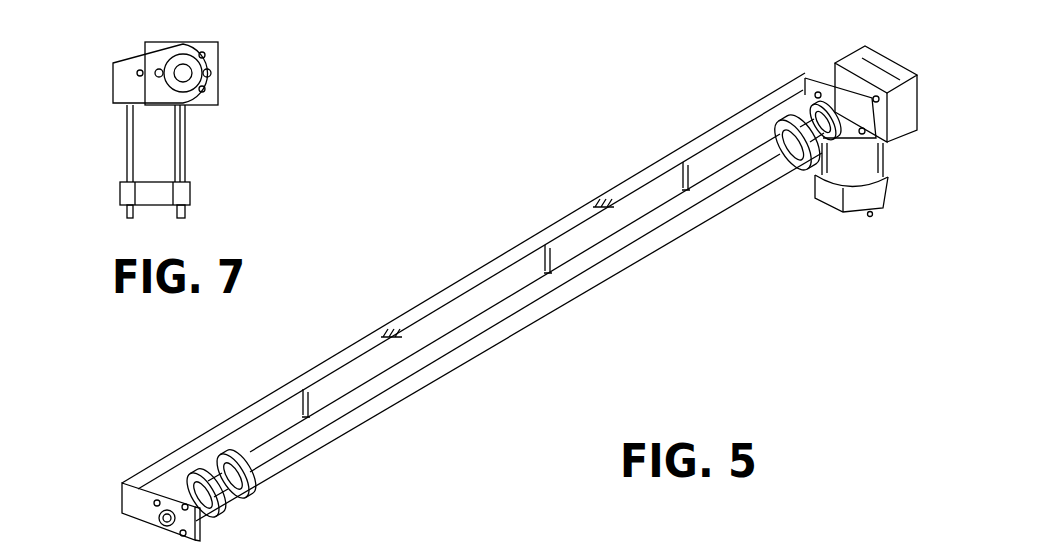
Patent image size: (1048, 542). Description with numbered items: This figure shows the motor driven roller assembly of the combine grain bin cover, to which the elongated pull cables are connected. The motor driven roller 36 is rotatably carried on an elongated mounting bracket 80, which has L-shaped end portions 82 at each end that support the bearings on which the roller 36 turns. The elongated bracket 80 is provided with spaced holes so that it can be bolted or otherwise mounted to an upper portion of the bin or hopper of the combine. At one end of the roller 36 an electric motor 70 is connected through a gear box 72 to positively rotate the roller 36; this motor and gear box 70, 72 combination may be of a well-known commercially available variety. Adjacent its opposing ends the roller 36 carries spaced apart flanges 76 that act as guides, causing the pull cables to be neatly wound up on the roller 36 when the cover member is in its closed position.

In FIG. 5, the motor driven roller 36 is at (440, 367).
In FIG. 7, the electric motor 70 is at (160, 151).
In FIG. 5, the gear box 72 is at (903, 100).
In FIG. 5, the flanges 76 is at (253, 498).
In FIG. 5, the elongated mounting bracket 80 is at (523, 247).
In FIG. 5, the L-shaped end portions 82 is at (138, 497).